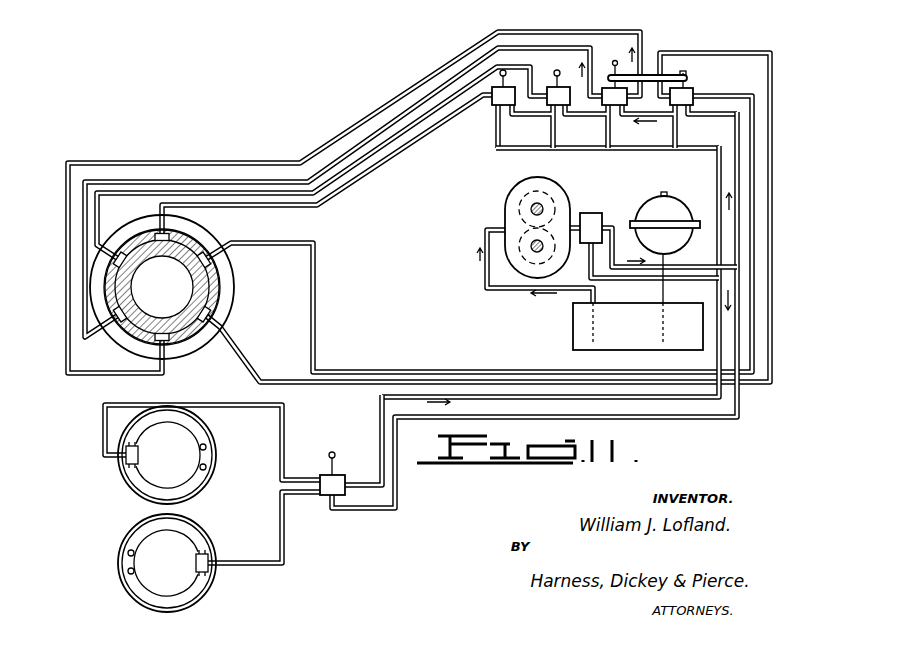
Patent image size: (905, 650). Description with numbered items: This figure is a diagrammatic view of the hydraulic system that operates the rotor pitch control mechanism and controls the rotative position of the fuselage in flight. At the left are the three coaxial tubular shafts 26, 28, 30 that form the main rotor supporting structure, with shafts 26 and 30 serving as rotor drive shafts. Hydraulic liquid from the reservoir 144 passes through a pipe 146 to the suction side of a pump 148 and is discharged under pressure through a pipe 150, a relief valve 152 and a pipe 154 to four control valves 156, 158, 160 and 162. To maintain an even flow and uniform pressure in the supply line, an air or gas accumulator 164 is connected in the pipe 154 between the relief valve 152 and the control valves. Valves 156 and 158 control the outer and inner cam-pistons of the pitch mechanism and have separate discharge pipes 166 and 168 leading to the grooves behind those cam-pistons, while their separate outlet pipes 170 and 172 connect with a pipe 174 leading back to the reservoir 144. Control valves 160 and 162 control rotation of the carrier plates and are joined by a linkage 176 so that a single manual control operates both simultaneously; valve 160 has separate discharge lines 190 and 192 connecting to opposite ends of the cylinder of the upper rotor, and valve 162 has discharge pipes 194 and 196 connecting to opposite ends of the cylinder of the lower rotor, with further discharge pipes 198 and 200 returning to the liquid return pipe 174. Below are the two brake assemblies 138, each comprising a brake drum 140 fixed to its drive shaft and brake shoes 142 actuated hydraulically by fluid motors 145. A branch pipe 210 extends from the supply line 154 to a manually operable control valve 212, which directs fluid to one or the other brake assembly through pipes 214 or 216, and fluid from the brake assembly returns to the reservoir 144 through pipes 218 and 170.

The tubular shaft 26 is at (193, 277).
The tubular shaft 28 is at (183, 327).
The tubular shaft 30 is at (226, 297).
The brake assembly 138 is at (224, 447).
The brake drum 140 is at (125, 541).
The brake shoes 142 is at (150, 526).
The reservoir 144 is at (572, 322).
The fluid motors 145 is at (124, 463).
The pipe 146 is at (486, 262).
The pump 148 is at (505, 201).
The pipe 150 is at (574, 224).
The relief valve 152 is at (594, 214).
The pipe 154 is at (723, 113).
The control valve 156 is at (503, 87).
The control valve 158 is at (558, 87).
The control valve 160 is at (614, 83).
The control valve 162 is at (681, 88).
The accumulator 164 is at (654, 220).
The discharge pipe 166 is at (348, 185).
The discharge pipe 168 is at (372, 154).
The outlet pipe 170 is at (495, 134).
The outlet pipe 172 is at (552, 130).
The pipe 174 is at (577, 151).
The linkage 176 is at (652, 76).
The discharge line 190 is at (205, 181).
The discharge line 192 is at (270, 160).
The discharge pipe 194 is at (692, 94).
The discharge pipe 196 is at (678, 52).
The discharge pipe 198 is at (606, 129).
The discharge pipe 200 is at (673, 129).
The branch pipe 210 is at (731, 407).
The control valve 212 is at (321, 476).
The pipe 214 is at (287, 429).
The pipe 216 is at (287, 542).
The pipe 218 is at (386, 484).